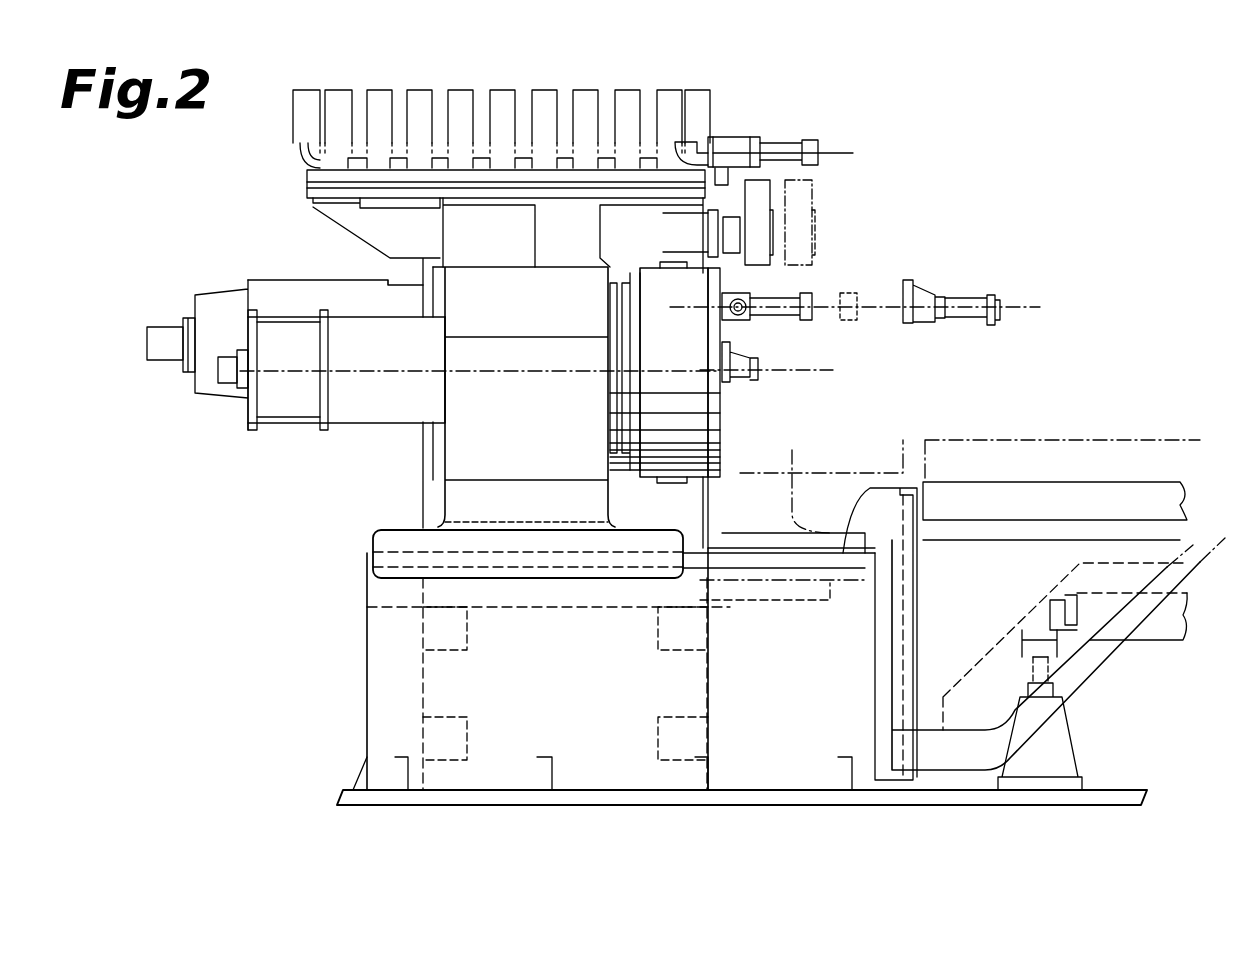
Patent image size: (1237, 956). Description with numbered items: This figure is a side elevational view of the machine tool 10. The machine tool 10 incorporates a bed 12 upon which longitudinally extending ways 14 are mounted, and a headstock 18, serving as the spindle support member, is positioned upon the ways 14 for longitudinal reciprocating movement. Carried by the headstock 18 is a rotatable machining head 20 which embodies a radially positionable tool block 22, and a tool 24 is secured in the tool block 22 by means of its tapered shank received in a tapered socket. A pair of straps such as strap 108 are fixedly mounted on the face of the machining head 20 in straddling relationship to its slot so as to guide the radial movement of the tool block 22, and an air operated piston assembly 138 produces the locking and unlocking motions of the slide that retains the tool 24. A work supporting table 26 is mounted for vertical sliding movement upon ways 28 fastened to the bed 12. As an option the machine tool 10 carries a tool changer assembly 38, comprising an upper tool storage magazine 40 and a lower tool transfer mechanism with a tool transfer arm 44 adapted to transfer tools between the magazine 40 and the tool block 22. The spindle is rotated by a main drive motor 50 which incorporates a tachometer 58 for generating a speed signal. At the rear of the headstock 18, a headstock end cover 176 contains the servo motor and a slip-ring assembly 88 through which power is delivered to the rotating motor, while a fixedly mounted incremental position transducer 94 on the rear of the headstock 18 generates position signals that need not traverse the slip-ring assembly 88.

The machine tool 10 is at (327, 557).
The bed 12 is at (572, 718).
The ways 14 is at (572, 560).
The headstock 18 is at (536, 457).
The machining head 20 is at (655, 400).
The tool block 22 is at (750, 320).
The tool 24 is at (782, 150).
The work supporting table 26 is at (1073, 497).
The ways 28 is at (913, 582).
The tool changer assembly 38 is at (832, 197).
The tool storage magazine 40 is at (585, 173).
The tool transfer arm 44 is at (757, 237).
The main drive motor 50 is at (300, 290).
The tachometer 58 is at (160, 333).
The slip-ring assembly 88 is at (290, 397).
The incremental position transducer 94 is at (228, 367).
The strap 108 is at (720, 445).
The air operated piston assembly 138 is at (740, 310).
The headstock end cover 176 is at (375, 405).